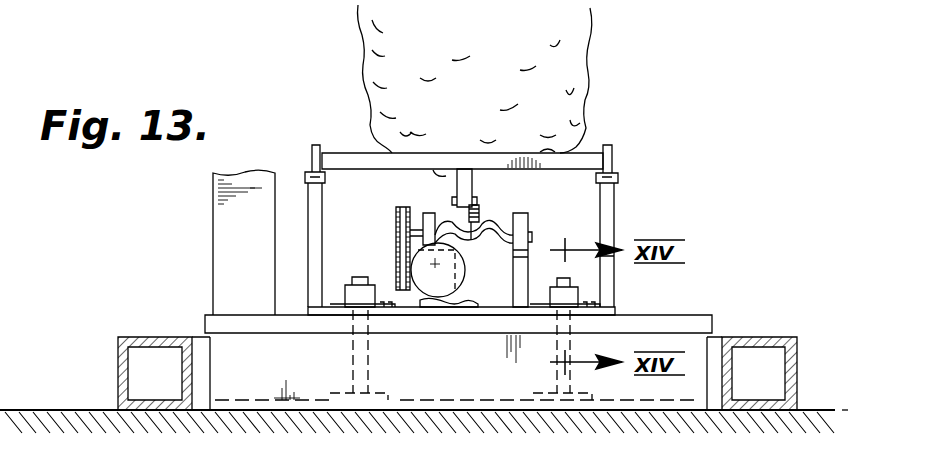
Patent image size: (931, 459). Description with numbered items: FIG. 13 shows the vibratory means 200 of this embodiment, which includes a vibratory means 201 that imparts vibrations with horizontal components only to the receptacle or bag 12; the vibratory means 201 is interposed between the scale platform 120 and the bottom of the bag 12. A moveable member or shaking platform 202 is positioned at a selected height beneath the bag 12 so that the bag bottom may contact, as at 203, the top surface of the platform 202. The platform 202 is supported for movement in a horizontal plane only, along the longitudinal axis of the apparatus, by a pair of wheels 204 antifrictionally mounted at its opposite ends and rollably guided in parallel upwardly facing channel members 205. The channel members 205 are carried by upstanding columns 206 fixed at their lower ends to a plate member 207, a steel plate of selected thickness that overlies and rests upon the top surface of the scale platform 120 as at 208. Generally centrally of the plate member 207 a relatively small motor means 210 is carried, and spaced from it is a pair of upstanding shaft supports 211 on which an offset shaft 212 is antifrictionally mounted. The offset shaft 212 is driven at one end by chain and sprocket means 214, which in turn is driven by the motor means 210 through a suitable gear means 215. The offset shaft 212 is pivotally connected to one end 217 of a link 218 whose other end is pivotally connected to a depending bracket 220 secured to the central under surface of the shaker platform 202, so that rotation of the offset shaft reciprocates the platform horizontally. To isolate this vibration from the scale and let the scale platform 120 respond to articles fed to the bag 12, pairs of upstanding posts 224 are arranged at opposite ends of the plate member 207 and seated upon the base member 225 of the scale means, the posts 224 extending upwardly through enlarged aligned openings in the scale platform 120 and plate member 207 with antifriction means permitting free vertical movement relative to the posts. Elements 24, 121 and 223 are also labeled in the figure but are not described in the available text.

The receptacle or bag 12 is at (592, 46).
The track rail 24 is at (789, 333).
The scale platform 120 is at (456, 320).
The shaft 121 is at (492, 302).
The vibratory means 200 is at (676, 192).
The vibratory means 201 is at (603, 130).
The moveable member or shaking platform 202 is at (352, 160).
The contact 203 is at (463, 153).
The wheels 204 is at (616, 160).
The channel members 205 is at (306, 180).
The upstanding columns 206 is at (310, 241).
The plate member 207 is at (616, 308).
The resting location 208 is at (612, 335).
The motor means 210 is at (461, 270).
The shaft supports 211 is at (429, 213).
The offset shaft 212 is at (480, 203).
The chain and sprocket means 214 is at (396, 256).
The gear means 215 is at (425, 313).
The end of link 217 is at (469, 240).
The link 218 is at (474, 192).
The depending bracket 220 is at (433, 170).
The rail 223 is at (161, 456).
The upstanding posts 224 is at (352, 360).
The base member 225 is at (668, 396).